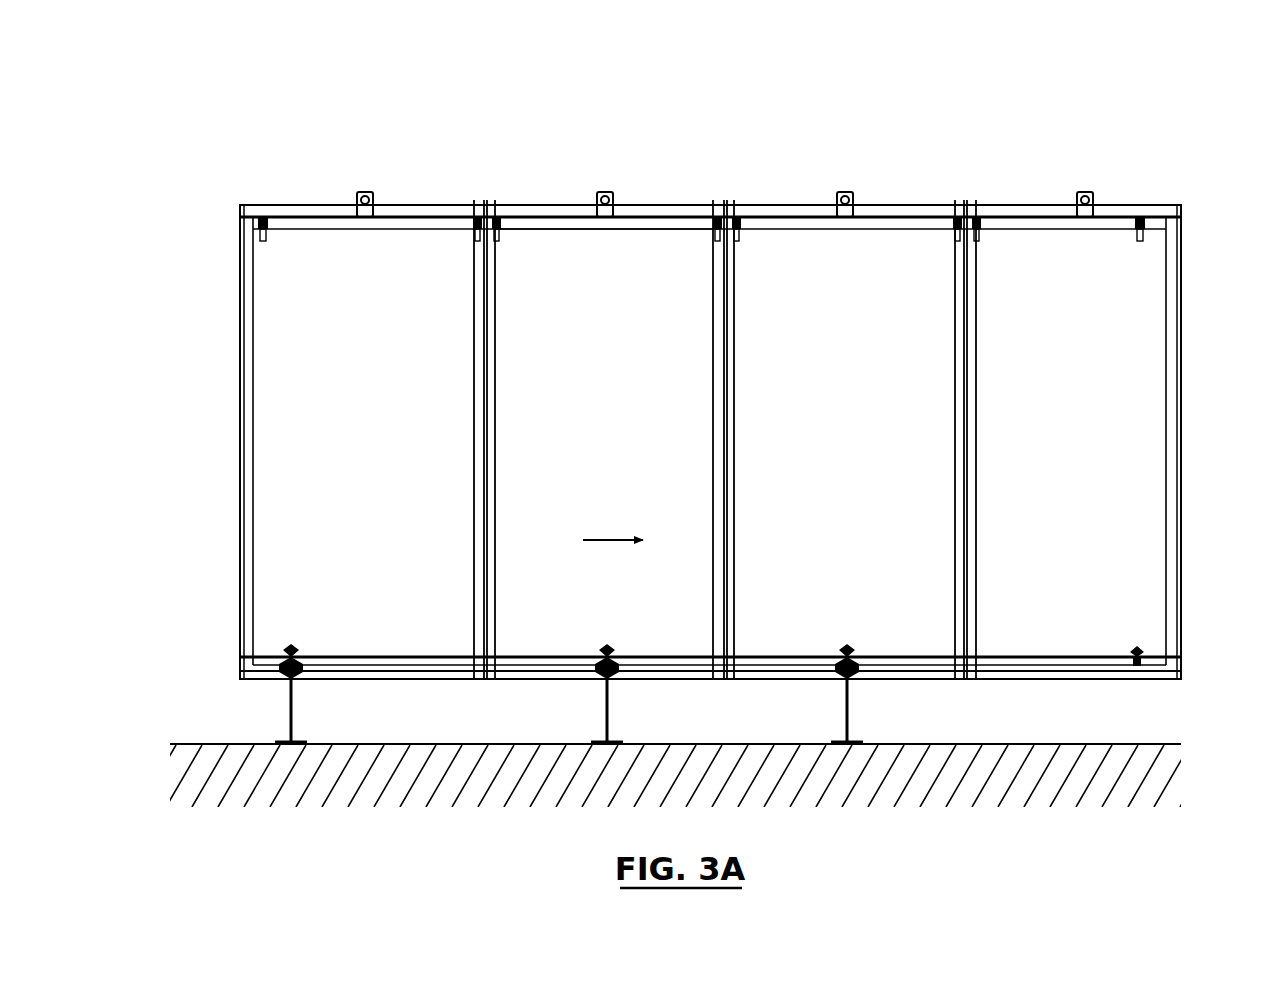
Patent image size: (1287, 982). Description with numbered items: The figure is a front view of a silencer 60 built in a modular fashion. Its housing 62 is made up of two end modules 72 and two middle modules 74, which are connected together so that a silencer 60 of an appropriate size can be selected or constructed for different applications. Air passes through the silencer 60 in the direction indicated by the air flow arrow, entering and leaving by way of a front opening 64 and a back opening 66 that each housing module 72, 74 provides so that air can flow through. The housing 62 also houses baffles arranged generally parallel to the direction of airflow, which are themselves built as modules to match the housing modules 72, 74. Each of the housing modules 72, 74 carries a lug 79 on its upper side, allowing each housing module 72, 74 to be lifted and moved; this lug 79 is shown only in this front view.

The silencer 60 is at (836, 118).
The housing 62 is at (672, 183).
The front opening 64 is at (224, 416).
The back opening 66 is at (1188, 390).
The end module 72 is at (410, 204).
The middle module 74 is at (533, 206).
The lug 79 is at (358, 192).